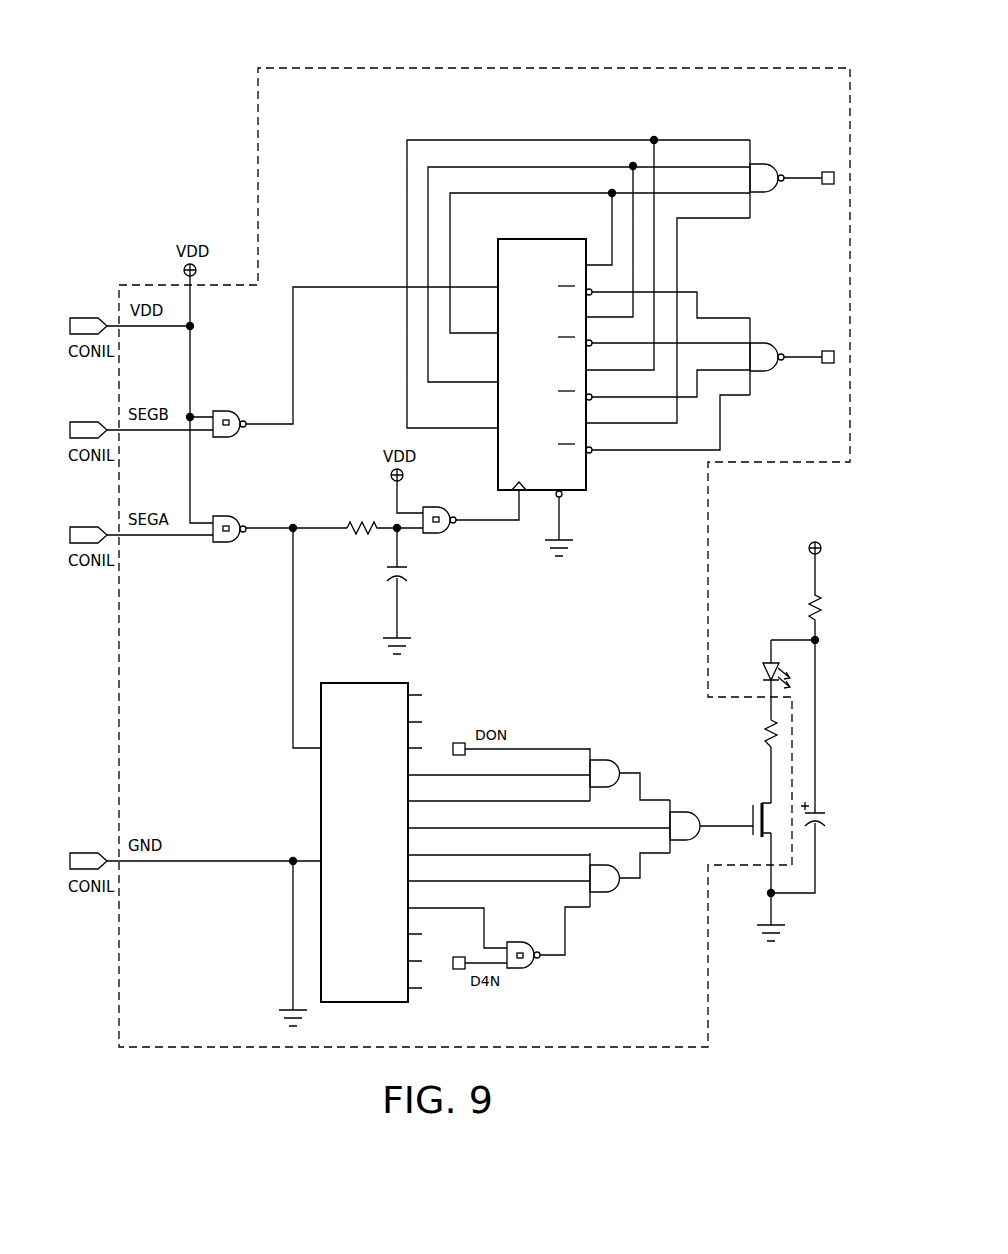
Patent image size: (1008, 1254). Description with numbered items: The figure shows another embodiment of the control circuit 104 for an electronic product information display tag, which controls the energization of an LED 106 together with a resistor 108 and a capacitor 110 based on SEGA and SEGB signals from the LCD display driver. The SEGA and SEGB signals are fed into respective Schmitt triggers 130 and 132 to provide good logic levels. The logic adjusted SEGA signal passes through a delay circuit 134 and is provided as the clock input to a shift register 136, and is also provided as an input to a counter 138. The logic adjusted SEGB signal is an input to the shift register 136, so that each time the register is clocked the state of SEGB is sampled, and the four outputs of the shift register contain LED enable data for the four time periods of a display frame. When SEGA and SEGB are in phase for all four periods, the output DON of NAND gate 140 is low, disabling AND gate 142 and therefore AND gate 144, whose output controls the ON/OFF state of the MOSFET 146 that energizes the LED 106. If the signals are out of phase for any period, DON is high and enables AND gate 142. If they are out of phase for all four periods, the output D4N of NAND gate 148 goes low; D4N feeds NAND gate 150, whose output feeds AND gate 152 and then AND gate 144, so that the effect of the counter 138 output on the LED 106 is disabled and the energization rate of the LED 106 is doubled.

The control circuit 104 is at (385, 68).
The LED 106 is at (768, 662).
The resistor 108 is at (812, 602).
The capacitor 110 is at (826, 815).
The Schmitt trigger 130 is at (230, 517).
The Schmitt trigger 132 is at (230, 410).
The delay circuit 134 is at (452, 548).
The shift register 136 is at (540, 239).
The counter 138 is at (352, 683).
The NAND gate 140 is at (757, 343).
The AND gate 142 is at (596, 760).
The AND gate 144 is at (680, 812).
The MOSFET 146 is at (755, 834).
The NAND gate 148 is at (757, 163).
The NAND gate 150 is at (520, 970).
The AND gate 152 is at (600, 893).